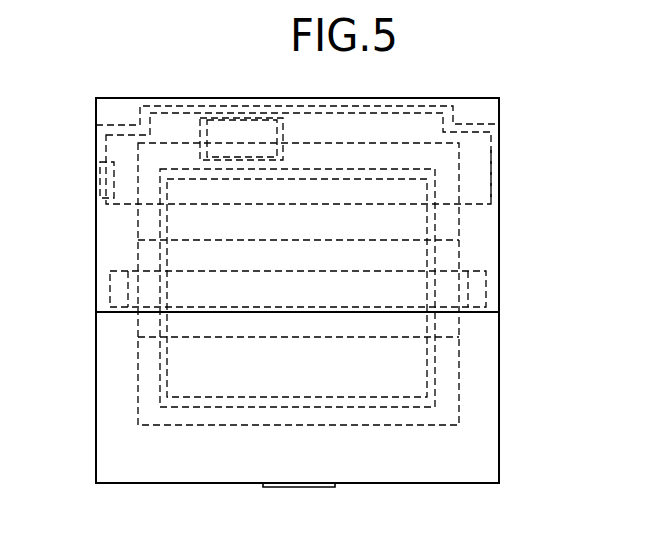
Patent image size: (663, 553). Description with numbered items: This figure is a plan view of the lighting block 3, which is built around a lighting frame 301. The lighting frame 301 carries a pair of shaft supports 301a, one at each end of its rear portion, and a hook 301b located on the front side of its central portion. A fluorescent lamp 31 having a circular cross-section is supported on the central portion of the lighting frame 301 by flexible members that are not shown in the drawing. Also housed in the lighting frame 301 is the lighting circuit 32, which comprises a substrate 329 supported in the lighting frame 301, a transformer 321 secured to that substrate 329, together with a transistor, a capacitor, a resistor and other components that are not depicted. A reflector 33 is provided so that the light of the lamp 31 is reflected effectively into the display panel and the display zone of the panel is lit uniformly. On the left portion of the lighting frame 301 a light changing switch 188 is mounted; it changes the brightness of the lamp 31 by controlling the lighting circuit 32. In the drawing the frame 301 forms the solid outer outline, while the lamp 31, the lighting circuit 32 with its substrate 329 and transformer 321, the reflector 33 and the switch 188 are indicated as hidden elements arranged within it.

The lighting block 3 is at (201, 488).
The lighting frame 301 is at (492, 440).
The shaft supports 301a is at (108, 114).
The hook 301b is at (302, 489).
The fluorescent lamp 31 is at (138, 293).
The lighting circuit 32 is at (491, 157).
The transformer 321 is at (247, 120).
The substrate 329 is at (484, 187).
The reflector 33 is at (458, 390).
The light changing switch 188 is at (102, 178).